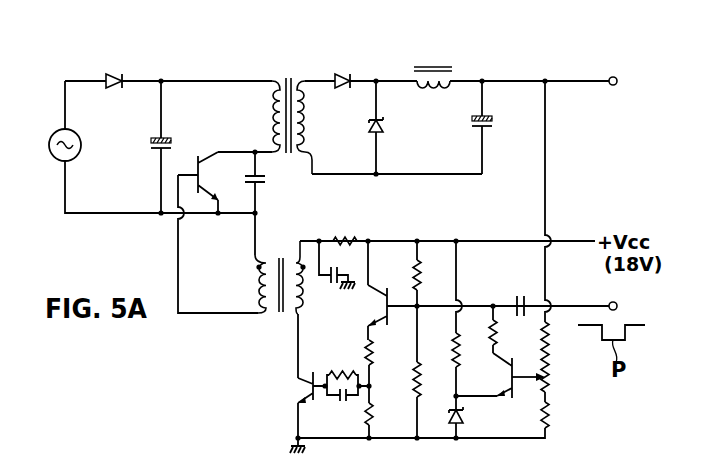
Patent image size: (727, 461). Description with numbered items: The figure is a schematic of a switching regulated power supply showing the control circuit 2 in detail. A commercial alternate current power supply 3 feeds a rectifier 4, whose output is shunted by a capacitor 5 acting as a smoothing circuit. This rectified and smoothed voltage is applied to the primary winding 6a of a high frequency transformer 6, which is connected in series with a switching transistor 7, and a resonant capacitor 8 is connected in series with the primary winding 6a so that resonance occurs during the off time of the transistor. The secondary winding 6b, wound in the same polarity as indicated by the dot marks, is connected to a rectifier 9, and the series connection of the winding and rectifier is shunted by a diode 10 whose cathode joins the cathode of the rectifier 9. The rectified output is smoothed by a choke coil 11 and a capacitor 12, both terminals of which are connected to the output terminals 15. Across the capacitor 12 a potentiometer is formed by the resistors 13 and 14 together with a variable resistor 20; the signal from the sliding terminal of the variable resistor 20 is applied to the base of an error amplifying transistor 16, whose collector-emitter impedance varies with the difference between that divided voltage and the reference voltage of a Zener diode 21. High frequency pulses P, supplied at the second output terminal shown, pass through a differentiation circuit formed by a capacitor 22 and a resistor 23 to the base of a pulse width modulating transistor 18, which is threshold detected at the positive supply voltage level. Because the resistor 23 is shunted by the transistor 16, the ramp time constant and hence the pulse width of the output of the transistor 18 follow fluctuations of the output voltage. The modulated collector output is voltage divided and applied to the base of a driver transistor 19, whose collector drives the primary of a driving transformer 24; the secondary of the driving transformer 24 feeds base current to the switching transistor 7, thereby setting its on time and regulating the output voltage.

The control circuit 2 is at (449, 232).
The commercial alternate current power supply 3 is at (58, 158).
The rectifier 4 is at (117, 88).
The capacitor 5 is at (153, 148).
The high frequency transformer 6 is at (297, 68).
The primary winding 6a is at (268, 120).
The secondary winding 6b is at (311, 128).
The switching transistor 7 is at (198, 157).
The resonant capacitor 8 is at (264, 182).
The rectifier 9 is at (349, 76).
The diode 10 is at (383, 126).
The choke coil 11 is at (440, 90).
The capacitor 12 is at (492, 126).
The resistor 13 is at (548, 345).
The resistor 14 is at (549, 420).
The output terminals 15 is at (613, 85).
The error amplifying transistor 16 is at (505, 392).
The pulse width modulating transistor 18 is at (378, 320).
The driver transistor 19 is at (306, 398).
The variable resistor 20 is at (549, 386).
The Zener diode 21 is at (463, 416).
The capacitor 22 is at (517, 298).
The resistor 23 is at (413, 384).
The driving transformer 24 is at (283, 313).